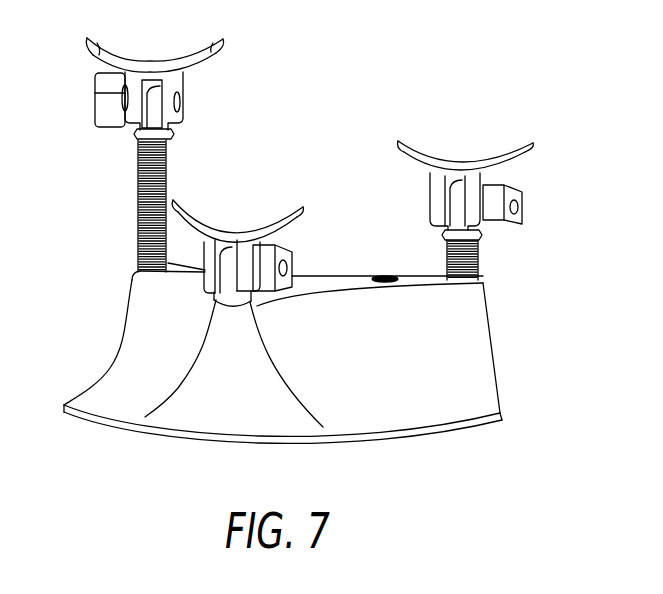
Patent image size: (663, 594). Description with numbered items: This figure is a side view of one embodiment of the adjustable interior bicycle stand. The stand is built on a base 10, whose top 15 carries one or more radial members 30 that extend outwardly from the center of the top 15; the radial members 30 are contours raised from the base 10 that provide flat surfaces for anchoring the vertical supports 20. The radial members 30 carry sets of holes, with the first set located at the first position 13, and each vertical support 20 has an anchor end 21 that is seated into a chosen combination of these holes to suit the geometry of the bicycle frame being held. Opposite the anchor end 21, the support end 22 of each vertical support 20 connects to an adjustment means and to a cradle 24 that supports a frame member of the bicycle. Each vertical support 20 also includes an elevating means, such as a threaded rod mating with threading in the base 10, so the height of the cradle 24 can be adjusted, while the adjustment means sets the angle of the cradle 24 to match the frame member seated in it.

The base 10 is at (497, 377).
The first position 13 is at (140, 265).
The top 15 is at (310, 277).
The vertical support 20 is at (313, 210).
The anchor end 21 is at (142, 240).
The support end 22 is at (166, 128).
The cradle 24 is at (120, 58).
The radial member 30 is at (418, 278).